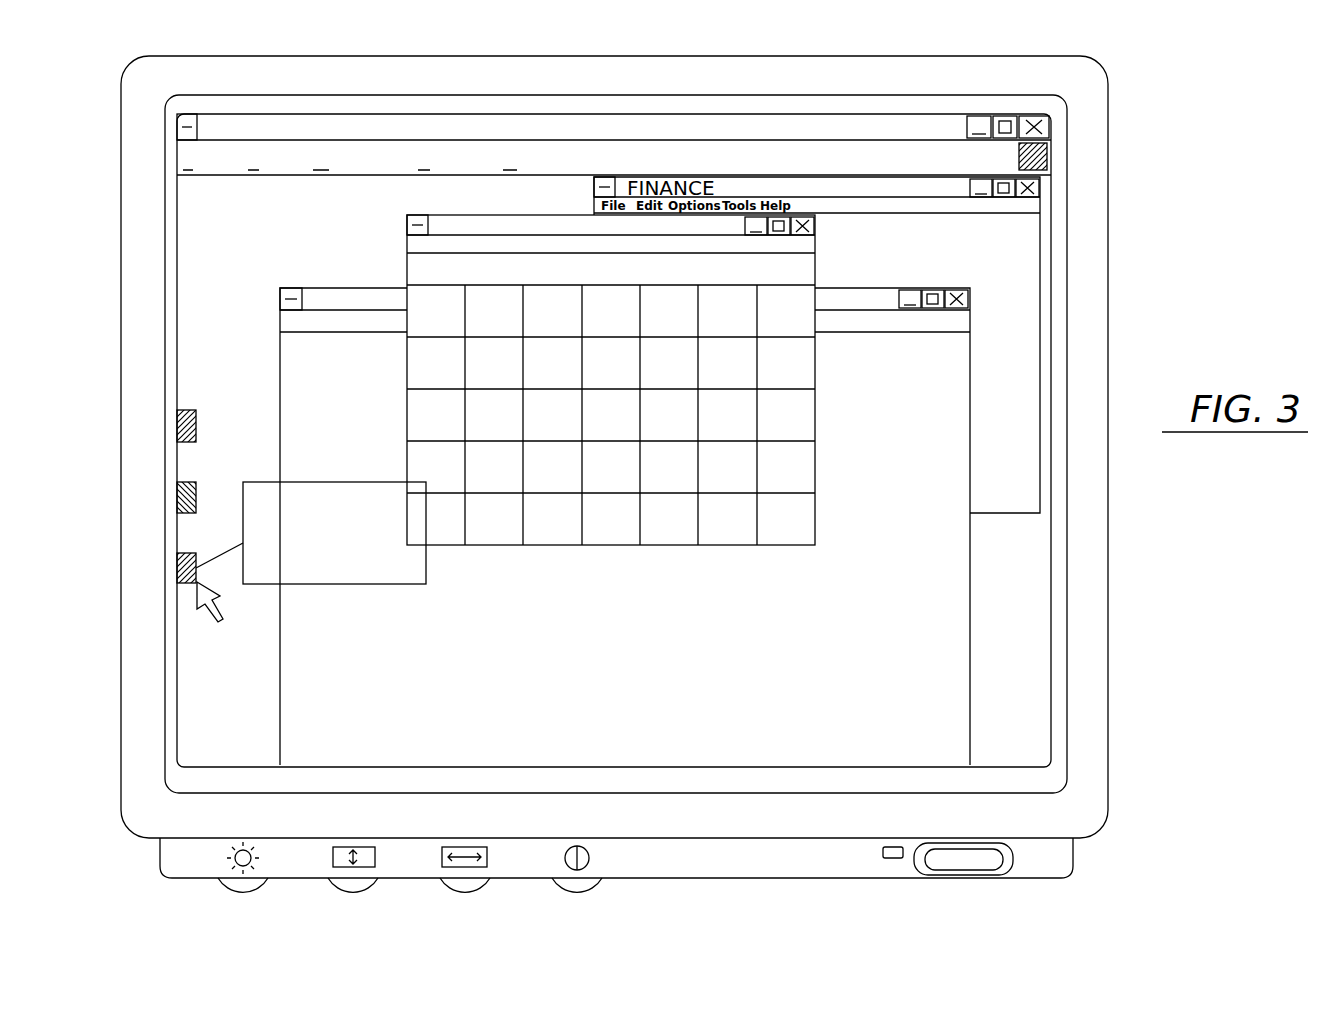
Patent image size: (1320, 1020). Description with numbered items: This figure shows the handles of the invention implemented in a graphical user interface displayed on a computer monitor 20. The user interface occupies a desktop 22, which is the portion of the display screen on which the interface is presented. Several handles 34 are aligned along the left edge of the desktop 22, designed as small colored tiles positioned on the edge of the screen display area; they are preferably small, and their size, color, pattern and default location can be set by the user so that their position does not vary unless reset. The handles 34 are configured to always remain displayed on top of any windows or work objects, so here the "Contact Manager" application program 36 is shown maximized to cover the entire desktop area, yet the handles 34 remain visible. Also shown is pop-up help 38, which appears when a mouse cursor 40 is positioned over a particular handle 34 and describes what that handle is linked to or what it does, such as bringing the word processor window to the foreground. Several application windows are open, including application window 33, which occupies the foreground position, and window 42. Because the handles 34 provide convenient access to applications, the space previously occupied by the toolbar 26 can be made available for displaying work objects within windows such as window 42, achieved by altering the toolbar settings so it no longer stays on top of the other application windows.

The computer monitor 20 is at (1090, 714).
The desktop 22 is at (1051, 340).
The toolbar 26 is at (1035, 712).
The application window 33 is at (820, 518).
The handles 34 is at (1045, 157).
The "Contact Manager" application program 36 is at (195, 140).
The pop-up help 38 is at (260, 587).
The mouse cursor 40 is at (210, 610).
The window 42 is at (972, 636).